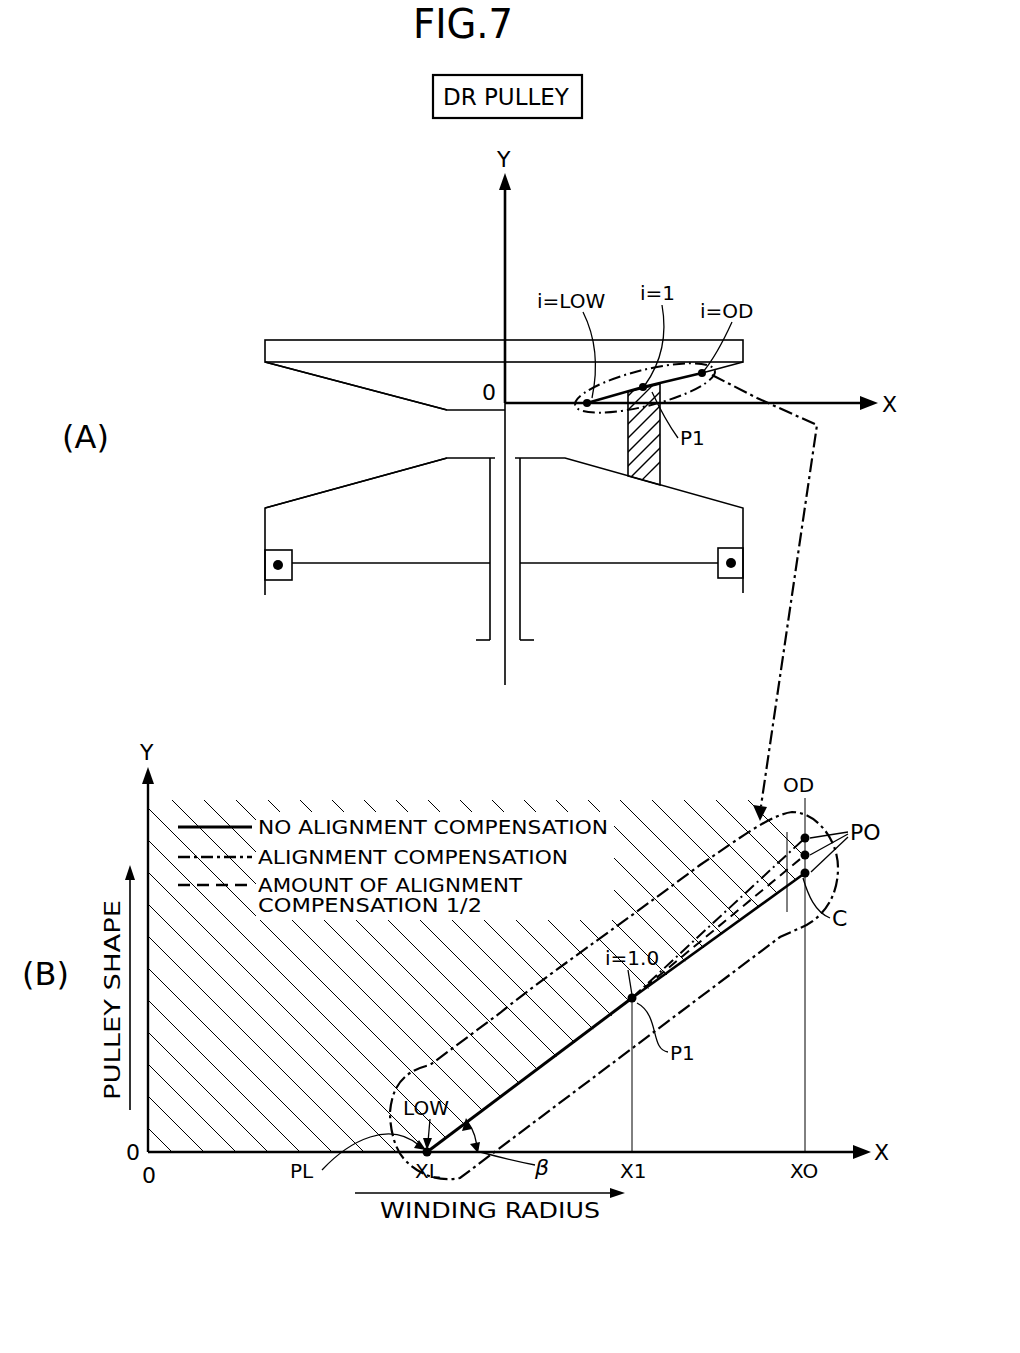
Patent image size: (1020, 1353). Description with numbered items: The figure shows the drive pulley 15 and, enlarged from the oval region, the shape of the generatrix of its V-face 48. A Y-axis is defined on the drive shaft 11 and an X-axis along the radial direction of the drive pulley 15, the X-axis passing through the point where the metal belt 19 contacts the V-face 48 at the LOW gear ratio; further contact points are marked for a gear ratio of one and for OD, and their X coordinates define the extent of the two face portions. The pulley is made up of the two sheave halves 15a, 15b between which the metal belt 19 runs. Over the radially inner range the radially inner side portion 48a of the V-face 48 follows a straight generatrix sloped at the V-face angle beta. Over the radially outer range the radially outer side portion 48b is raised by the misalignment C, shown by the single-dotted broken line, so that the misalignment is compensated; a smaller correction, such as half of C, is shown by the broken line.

The drive shaft 11 is at (507, 662).
The drive pulley 15 is at (445, 490).
The fixed sheave 15a is at (298, 379).
The movable sheave 15b is at (303, 489).
The metal belt 19 is at (650, 463).
The V-face 48 is at (362, 394).
The radially inner side portion 48a is at (607, 413).
The radially outer side portion 48b is at (672, 380).